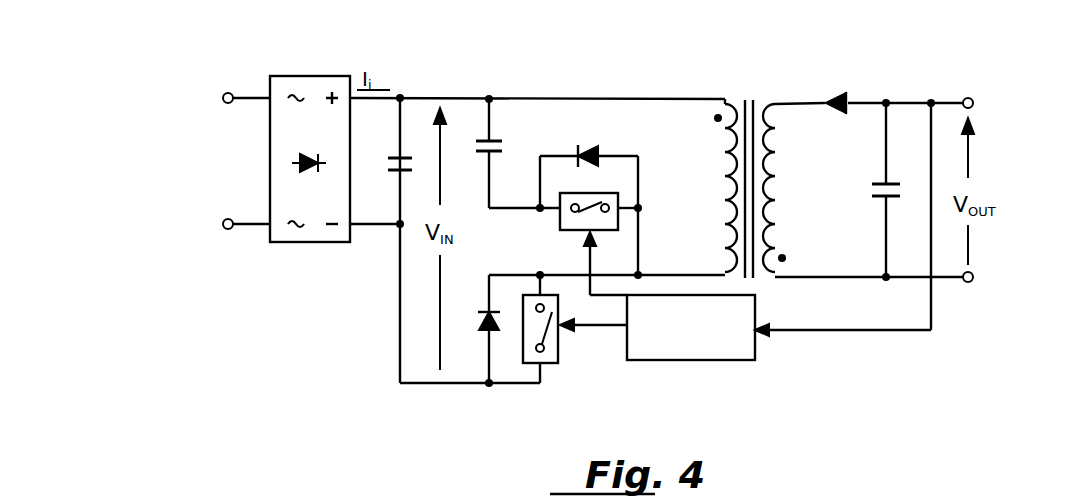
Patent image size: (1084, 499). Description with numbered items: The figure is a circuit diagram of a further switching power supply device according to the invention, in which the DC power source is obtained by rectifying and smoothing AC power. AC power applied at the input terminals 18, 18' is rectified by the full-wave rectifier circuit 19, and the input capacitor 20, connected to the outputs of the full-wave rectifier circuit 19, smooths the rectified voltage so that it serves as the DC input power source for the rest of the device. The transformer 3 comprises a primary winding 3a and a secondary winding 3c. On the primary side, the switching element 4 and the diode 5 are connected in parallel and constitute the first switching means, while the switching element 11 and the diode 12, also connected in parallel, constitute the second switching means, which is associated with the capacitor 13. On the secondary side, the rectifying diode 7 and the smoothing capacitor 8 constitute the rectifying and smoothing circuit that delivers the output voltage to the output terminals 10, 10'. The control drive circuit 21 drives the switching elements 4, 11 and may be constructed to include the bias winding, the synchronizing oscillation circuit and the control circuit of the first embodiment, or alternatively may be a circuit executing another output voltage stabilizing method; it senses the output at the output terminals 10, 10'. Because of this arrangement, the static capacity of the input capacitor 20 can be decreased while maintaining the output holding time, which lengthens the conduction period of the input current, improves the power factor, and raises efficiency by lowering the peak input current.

The transformer 3 is at (754, 162).
The primary winding 3a is at (722, 158).
The secondary winding 3c is at (778, 164).
The switching element 4 is at (554, 356).
The diode 5 is at (486, 324).
The rectifying diode 7 is at (836, 100).
The smoothing capacitor 8 is at (878, 198).
The output terminal 10 is at (978, 73).
The output terminal 10' is at (984, 308).
The switching element 11 is at (560, 220).
The diode 12 is at (598, 150).
The capacitor 13 is at (498, 140).
The input terminal 18 is at (249, 66).
The input terminal 18' is at (248, 254).
The full-wave rectifier circuit 19 is at (310, 80).
The input capacitor 20 is at (398, 156).
The control drive circuit 21 is at (722, 356).